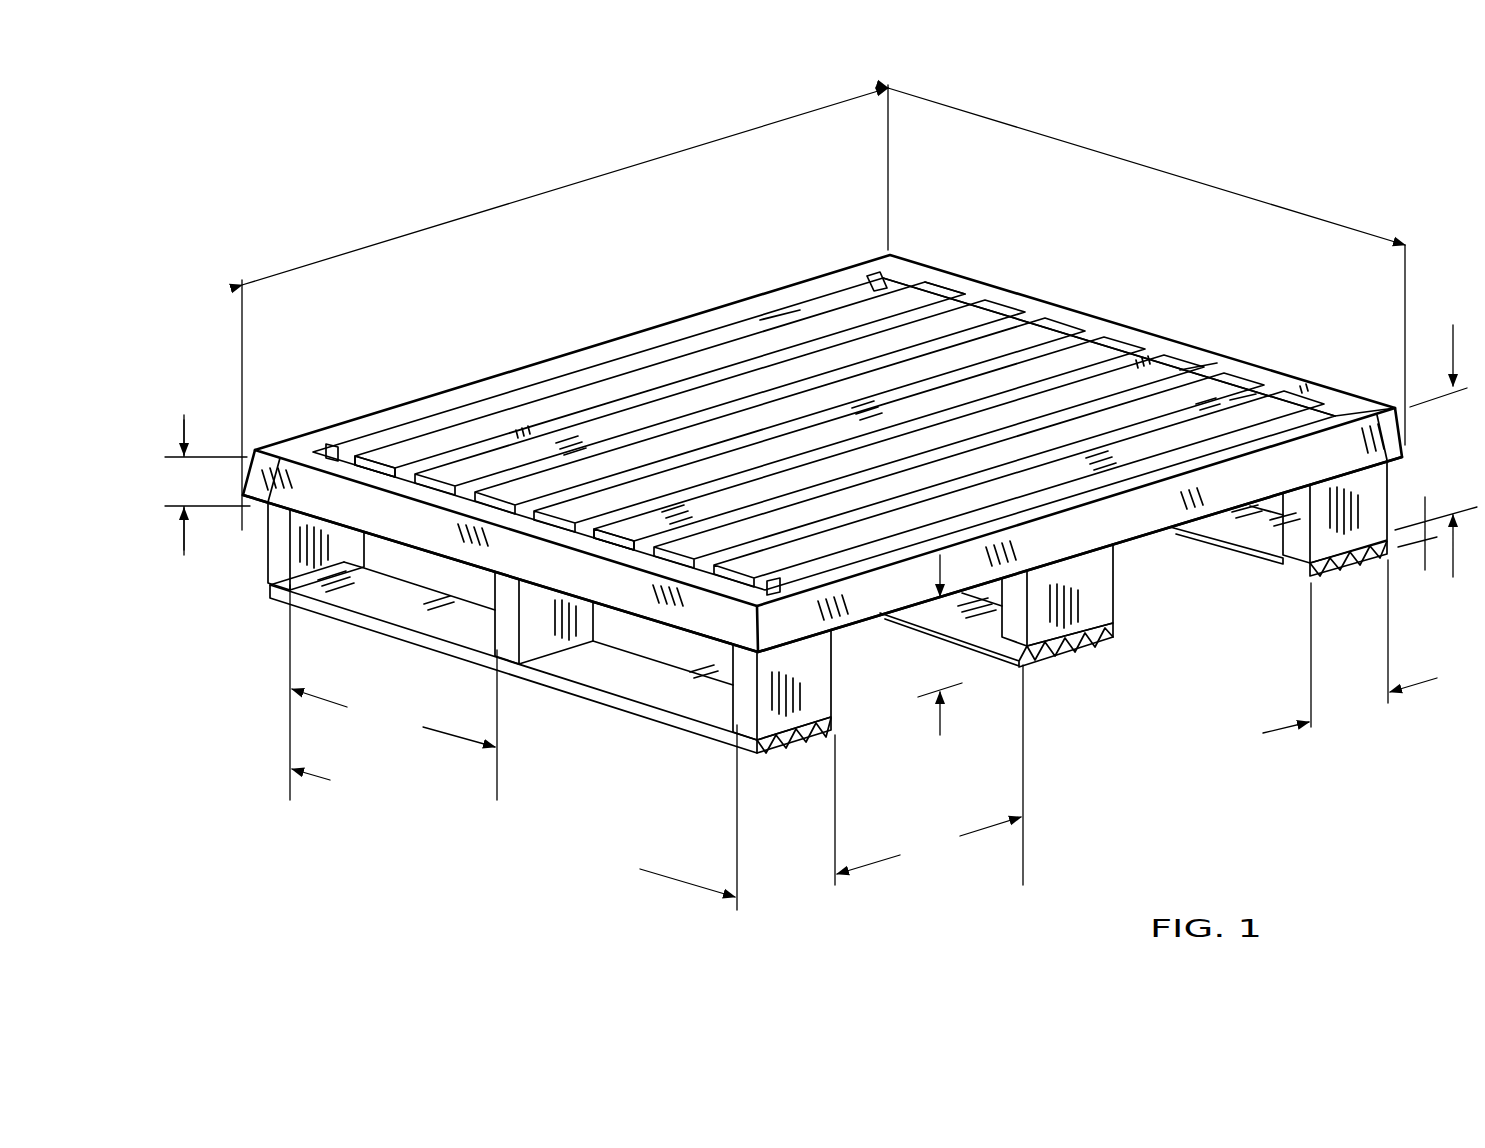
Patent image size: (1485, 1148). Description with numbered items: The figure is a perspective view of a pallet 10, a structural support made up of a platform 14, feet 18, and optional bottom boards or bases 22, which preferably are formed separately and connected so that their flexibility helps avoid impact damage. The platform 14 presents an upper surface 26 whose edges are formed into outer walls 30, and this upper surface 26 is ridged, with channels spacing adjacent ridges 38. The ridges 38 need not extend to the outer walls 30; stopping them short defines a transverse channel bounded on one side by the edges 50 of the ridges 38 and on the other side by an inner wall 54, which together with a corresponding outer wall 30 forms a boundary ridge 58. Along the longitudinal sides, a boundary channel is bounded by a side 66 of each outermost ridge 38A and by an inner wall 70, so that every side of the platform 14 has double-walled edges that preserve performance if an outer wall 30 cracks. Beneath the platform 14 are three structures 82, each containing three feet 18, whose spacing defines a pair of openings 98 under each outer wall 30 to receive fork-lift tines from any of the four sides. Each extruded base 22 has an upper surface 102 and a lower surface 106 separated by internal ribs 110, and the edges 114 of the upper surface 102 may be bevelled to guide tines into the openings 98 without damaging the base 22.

The pallet 10 is at (758, 186).
The platform 14 is at (482, 366).
The feet 18 is at (274, 541).
The bases 22 is at (1078, 657).
The upper surface 26 is at (958, 312).
The outer walls 30 is at (720, 627).
The ridges 38 is at (1005, 341).
The outermost ridge 38A is at (610, 380).
The edges of ridges 50 is at (376, 465).
The inner wall 54 is at (1256, 394).
The boundary ridge 58 is at (1217, 363).
The side of outermost ridge 66 is at (1327, 398).
The inner wall 70 is at (800, 310).
The structures 82 is at (260, 575).
The openings 98 is at (784, 604).
The upper surface 102 is at (660, 636).
The lower surface 106 is at (1104, 642).
The internal ribs 110 is at (776, 745).
The edges 114 is at (1135, 375).